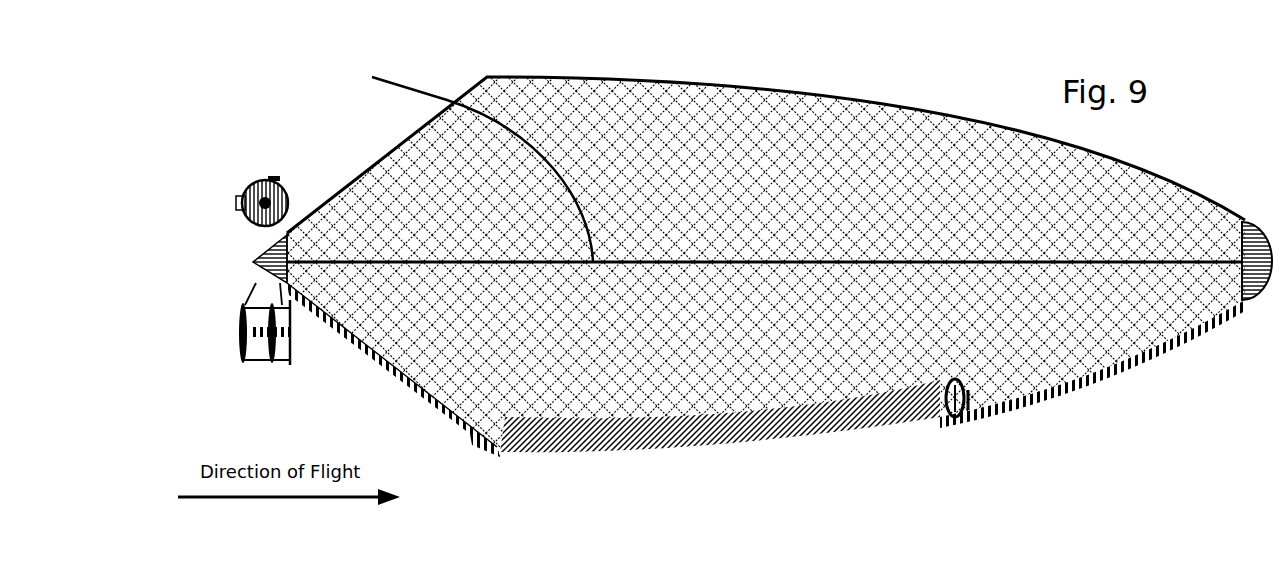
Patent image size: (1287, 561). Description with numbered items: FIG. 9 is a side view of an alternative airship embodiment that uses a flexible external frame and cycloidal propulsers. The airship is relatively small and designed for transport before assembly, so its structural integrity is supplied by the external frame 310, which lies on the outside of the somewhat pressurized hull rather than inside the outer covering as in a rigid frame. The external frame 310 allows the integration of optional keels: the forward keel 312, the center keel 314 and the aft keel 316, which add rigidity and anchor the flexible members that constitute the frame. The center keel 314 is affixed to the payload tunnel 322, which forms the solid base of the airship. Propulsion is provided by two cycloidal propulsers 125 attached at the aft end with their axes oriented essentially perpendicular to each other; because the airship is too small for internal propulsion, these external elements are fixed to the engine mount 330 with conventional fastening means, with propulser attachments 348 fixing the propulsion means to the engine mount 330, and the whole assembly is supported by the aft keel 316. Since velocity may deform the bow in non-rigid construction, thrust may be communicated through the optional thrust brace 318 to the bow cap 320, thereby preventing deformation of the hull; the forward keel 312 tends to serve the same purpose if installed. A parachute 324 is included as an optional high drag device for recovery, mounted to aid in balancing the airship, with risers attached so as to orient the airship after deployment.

The external frame 310 is at (865, 172).
The forward keel 312 is at (1130, 360).
The center keel 314 is at (497, 448).
The aft keel 316 is at (370, 358).
The thrust brace 318 is at (459, 162).
The bow cap 320 is at (1247, 235).
The payload tunnel 322 is at (738, 423).
The parachute 324 is at (955, 415).
The engine mount 330 is at (262, 250).
The propulser attachments 348 is at (258, 262).
The cycloidal propulsers 125 is at (258, 180).